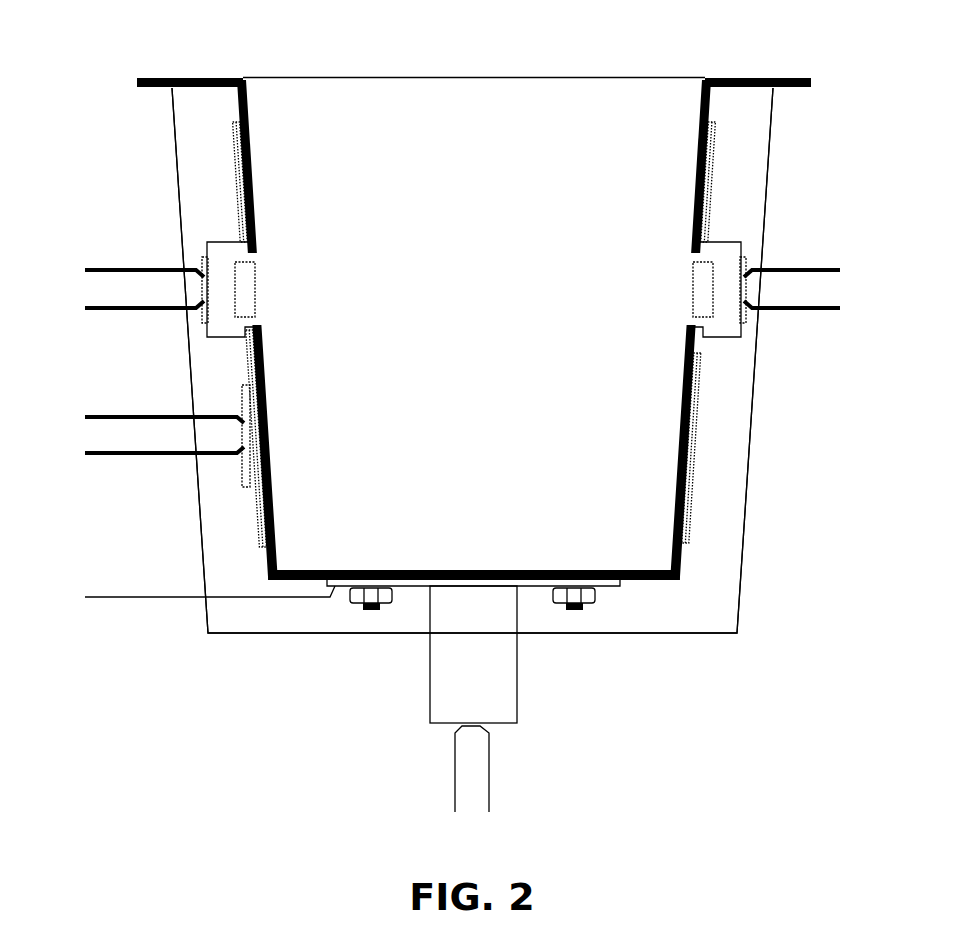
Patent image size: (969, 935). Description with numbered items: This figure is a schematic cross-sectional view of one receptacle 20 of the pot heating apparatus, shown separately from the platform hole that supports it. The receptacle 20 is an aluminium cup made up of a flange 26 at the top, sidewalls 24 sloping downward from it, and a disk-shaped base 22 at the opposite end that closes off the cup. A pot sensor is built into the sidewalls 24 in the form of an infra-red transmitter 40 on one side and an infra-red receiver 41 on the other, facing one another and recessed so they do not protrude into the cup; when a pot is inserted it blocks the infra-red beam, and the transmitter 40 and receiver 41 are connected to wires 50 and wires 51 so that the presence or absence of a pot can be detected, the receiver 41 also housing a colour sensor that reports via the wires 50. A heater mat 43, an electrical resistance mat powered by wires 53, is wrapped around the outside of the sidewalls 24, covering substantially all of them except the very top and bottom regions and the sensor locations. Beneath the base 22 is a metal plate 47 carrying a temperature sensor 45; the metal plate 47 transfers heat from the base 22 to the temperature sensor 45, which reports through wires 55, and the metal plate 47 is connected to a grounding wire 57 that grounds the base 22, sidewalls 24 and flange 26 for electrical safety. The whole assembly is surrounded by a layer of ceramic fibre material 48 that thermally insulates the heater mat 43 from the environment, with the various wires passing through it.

The receptacle 20 is at (112, 42).
The base 22 is at (653, 583).
The sidewalls 24 is at (682, 552).
The flange 26 is at (504, 51).
The infra-red transmitter 40 is at (733, 231).
The infra-red receiver 41 is at (213, 231).
The heater mat 43 is at (232, 155).
The temperature sensor 45 is at (517, 673).
The metal plate 47 is at (412, 586).
The ceramic fibre material 48 is at (750, 467).
The wires 50 is at (848, 252).
The wires 51 is at (78, 252).
The wires 53 is at (78, 400).
The wires 55 is at (505, 815).
The grounding wire 57 is at (334, 595).